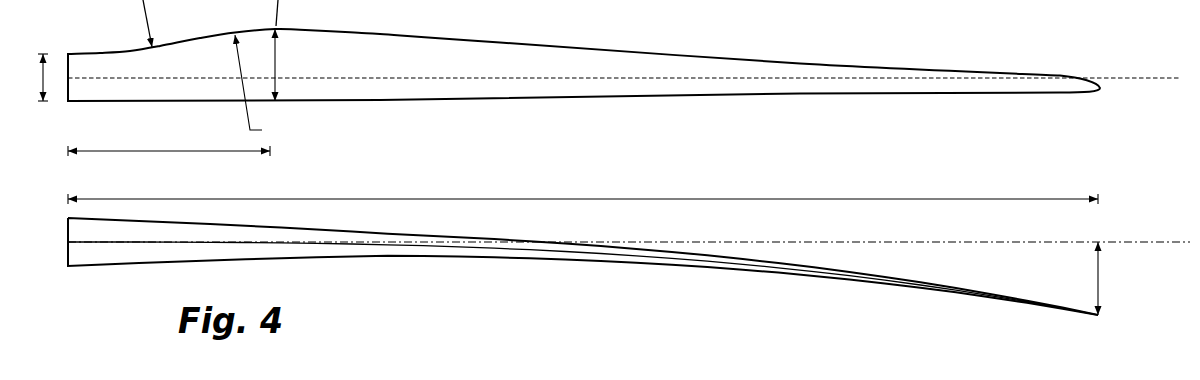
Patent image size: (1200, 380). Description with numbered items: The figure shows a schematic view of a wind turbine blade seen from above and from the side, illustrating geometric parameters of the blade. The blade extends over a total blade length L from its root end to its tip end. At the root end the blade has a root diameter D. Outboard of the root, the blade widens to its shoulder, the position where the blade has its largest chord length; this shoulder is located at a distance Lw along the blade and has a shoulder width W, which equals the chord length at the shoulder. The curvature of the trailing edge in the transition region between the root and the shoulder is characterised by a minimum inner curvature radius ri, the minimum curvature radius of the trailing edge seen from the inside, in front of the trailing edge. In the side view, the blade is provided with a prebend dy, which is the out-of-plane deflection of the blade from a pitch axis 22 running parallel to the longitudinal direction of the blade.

The pitch axis 22 is at (476, 78).
The root diameter D is at (35, 77).
The shoulder width W is at (289, 65).
The minimum inner curvature radius ri is at (258, 91).
The shoulder position Lw is at (169, 140).
The total blade length L is at (583, 188).
The prebend dy is at (1115, 278).